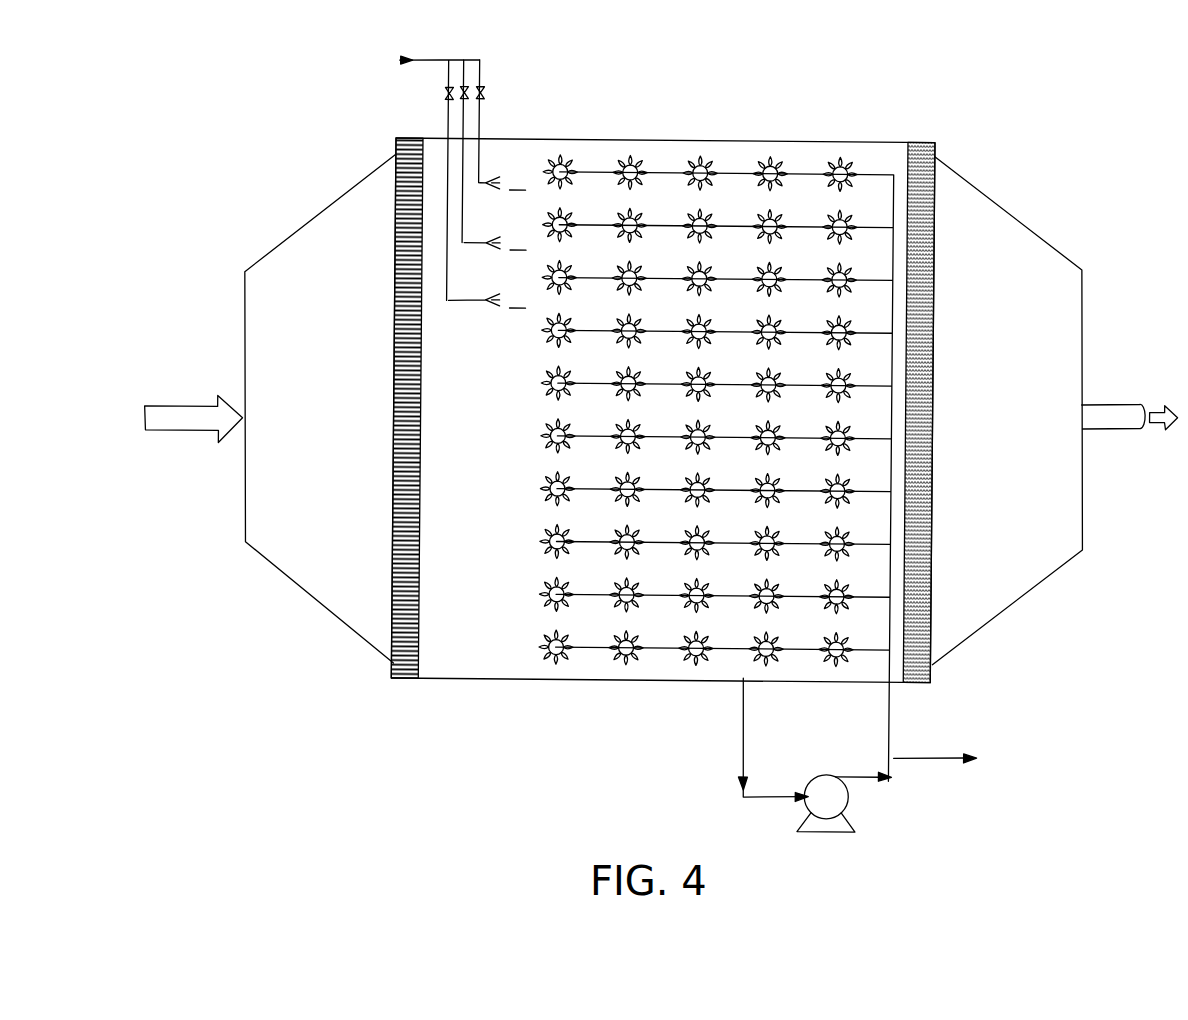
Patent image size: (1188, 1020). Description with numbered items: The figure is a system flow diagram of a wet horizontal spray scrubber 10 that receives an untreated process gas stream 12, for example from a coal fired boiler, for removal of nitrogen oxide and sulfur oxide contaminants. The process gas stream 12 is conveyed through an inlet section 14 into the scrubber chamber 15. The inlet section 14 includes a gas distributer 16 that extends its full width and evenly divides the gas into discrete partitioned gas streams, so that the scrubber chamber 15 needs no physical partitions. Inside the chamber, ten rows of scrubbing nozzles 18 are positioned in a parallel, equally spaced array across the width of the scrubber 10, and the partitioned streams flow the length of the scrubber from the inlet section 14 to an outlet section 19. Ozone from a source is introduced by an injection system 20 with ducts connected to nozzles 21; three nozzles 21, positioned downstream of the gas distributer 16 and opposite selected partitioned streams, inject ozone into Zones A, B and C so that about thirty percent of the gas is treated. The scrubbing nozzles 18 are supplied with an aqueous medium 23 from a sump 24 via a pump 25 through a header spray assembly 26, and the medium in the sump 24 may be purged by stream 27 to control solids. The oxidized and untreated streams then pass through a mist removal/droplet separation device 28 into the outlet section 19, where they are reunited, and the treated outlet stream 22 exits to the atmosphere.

The wet horizontal spray scrubber 10 is at (265, 191).
The process gas stream 12 is at (187, 420).
The inlet section 14 is at (307, 593).
The scrubber chamber 15 is at (450, 655).
The gas distributer 16 is at (395, 147).
The scrubbing nozzles 18 is at (666, 207).
The outlet section 19 is at (1010, 602).
The injection system 20 is at (483, 90).
The nozzles 21 is at (493, 166).
The outlet stream 22 is at (1163, 425).
The aqueous medium 23 is at (746, 744).
The sump 24 is at (523, 682).
The pump 25 is at (834, 839).
The header spray assembly 26 is at (896, 711).
The purge stream 27 is at (927, 754).
The mist removal/droplet separation device 28 is at (930, 130).